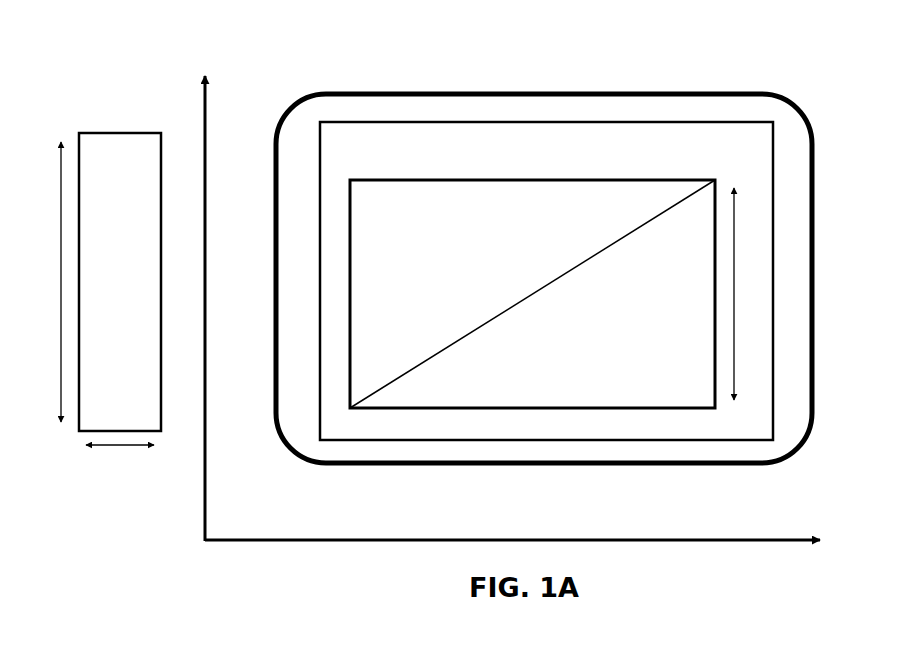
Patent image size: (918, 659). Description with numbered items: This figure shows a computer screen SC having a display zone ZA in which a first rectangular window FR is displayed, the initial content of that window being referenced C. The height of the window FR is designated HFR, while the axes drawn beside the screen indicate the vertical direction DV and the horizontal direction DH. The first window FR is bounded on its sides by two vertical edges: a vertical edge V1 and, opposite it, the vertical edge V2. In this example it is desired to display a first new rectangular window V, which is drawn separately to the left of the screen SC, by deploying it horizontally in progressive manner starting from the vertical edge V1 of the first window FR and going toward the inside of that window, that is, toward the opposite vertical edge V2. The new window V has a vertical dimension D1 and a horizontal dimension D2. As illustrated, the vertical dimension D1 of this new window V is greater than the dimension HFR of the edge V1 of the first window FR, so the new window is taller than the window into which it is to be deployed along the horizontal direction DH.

The vertical direction DV is at (214, 293).
The horizontal direction DH is at (532, 540).
The first new rectangular window V is at (147, 133).
The vertical dimension of new window D1 is at (61, 253).
The horizontal dimension of new window D2 is at (110, 447).
The computer screen SC is at (708, 463).
The display zone ZA is at (609, 440).
The first rectangular window FR is at (455, 170).
The initial content of first window C is at (532, 296).
The vertical edge of first window V1 is at (350, 293).
The opposite vertical edge of first window V2 is at (713, 322).
The height of first window HFR is at (735, 280).